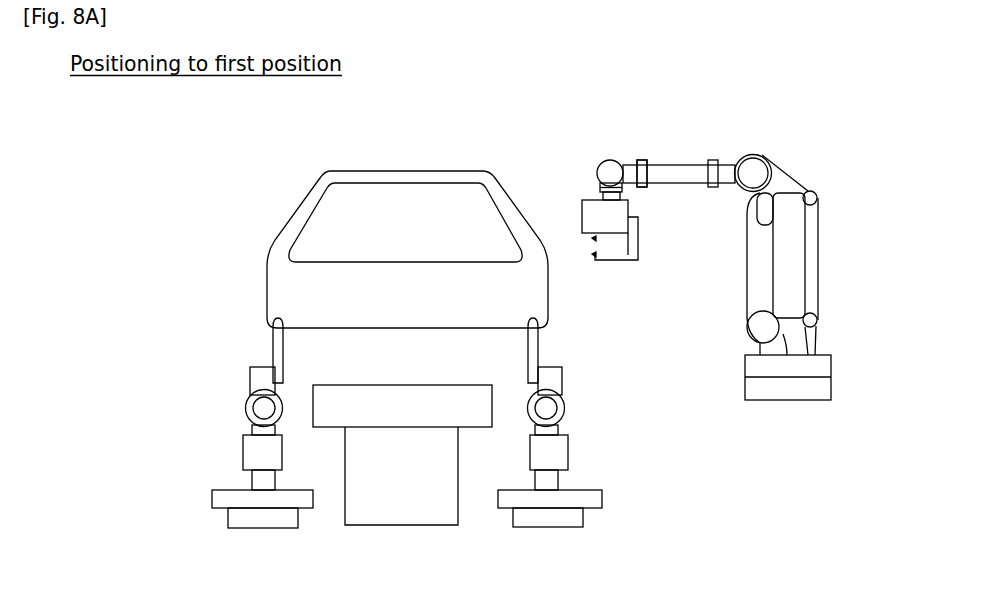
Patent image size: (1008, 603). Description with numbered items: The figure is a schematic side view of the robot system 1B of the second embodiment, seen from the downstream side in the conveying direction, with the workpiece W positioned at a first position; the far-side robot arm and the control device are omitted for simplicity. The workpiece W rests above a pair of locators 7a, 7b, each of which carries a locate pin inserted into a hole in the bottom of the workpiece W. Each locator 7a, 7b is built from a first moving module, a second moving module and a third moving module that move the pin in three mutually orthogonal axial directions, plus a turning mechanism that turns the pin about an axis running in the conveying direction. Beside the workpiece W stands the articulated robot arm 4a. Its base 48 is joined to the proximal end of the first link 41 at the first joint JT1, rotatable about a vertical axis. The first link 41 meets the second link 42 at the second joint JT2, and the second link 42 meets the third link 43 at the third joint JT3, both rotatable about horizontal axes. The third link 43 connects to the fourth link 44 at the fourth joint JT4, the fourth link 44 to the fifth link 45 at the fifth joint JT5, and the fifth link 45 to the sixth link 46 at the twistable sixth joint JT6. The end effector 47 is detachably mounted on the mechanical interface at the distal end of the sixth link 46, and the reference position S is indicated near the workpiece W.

The workpiece W is at (393, 168).
The reference position S is at (217, 198).
The robot system 1B is at (710, 77).
The robot arm 4a is at (825, 183).
The locator 7a is at (568, 443).
The locator 7b is at (241, 448).
The first link 41 is at (757, 350).
The second link 42 is at (747, 258).
The third link 43 is at (730, 162).
The fourth link 44 is at (628, 165).
The fifth link 45 is at (600, 185).
The sixth link 46 is at (622, 196).
The end effector 47 is at (638, 253).
The base 48 is at (752, 395).
The first joint JT1 is at (758, 367).
The second joint JT2 is at (760, 327).
The third joint JT3 is at (760, 167).
The fourth joint JT4 is at (641, 160).
The fifth joint JT5 is at (605, 166).
The sixth joint JT6 is at (623, 192).